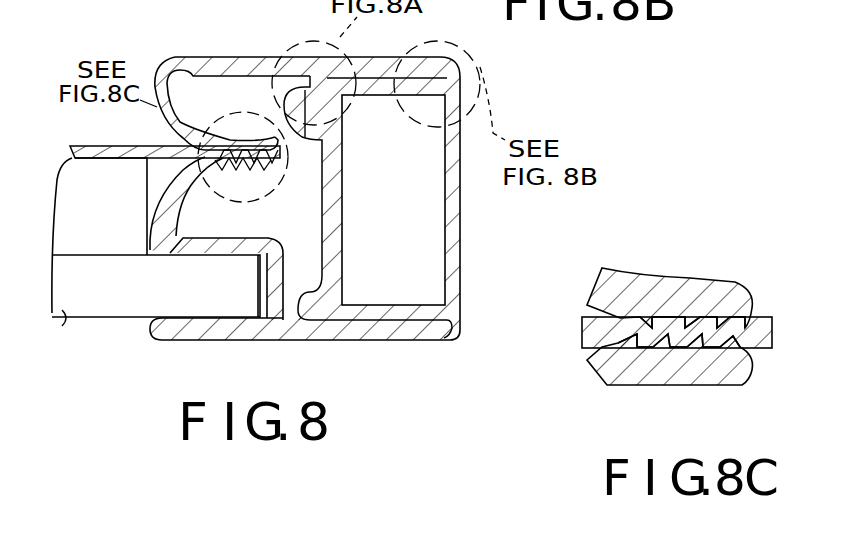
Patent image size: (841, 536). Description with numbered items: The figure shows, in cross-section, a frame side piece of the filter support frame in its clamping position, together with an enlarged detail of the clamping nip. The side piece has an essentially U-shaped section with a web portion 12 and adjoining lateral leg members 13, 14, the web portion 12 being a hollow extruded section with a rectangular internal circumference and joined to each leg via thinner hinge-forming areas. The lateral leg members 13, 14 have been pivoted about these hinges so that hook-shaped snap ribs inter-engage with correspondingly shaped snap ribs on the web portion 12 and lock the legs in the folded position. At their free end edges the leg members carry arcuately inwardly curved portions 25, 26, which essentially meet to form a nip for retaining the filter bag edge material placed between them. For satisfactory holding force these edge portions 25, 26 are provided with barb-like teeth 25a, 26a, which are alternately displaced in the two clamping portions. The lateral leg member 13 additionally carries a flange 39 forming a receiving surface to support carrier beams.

In FIG. 8, the web portion 12 is at (460, 263).
In FIG. 8, the lateral leg member 13 is at (270, 330).
In FIG. 8, the lateral leg member 14 is at (240, 55).
In FIG. 8, the flange 39 is at (67, 317).
In FIG. 8C, the arcuately inwardly curved portion 25 is at (670, 363).
In FIG. 8C, the barb-like teeth 25a is at (742, 353).
In FIG. 8C, the arcuately inwardly curved portion 26 is at (667, 288).
In FIG. 8C, the barb-like teeth 26a is at (727, 282).